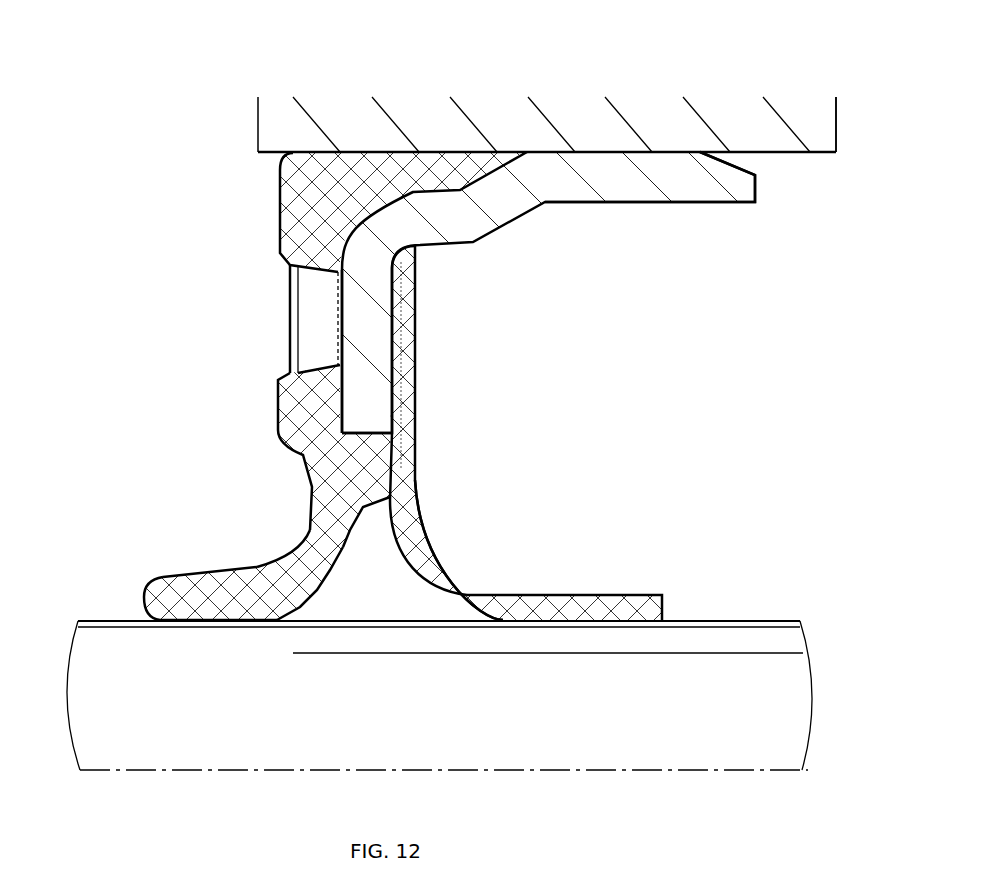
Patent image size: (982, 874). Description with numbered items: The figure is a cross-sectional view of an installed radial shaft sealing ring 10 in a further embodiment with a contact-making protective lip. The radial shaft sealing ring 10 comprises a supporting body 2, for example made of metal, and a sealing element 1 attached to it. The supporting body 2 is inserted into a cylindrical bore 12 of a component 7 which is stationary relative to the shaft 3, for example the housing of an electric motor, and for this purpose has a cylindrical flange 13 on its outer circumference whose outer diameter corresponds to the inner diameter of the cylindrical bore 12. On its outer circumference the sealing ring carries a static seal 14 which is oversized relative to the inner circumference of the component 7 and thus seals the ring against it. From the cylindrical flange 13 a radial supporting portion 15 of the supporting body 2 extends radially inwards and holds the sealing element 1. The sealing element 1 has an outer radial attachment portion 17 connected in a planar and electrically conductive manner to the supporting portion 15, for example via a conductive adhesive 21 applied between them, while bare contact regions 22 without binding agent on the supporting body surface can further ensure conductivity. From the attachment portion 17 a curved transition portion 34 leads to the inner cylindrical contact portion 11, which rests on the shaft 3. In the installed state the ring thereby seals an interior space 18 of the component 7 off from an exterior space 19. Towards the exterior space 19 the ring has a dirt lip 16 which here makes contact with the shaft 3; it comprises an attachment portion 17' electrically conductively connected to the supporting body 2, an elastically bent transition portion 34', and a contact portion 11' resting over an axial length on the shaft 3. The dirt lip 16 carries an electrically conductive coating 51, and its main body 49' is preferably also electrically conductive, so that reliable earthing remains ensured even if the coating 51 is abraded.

The sealing element 1 is at (402, 452).
The supporting body 2 is at (505, 242).
The shaft 3 is at (785, 695).
The component 7 is at (655, 120).
The radial shaft sealing ring 10 is at (263, 283).
The contact portion 11 is at (564, 565).
The contact portion 11' is at (195, 582).
The cylindrical bore 12 is at (812, 153).
The cylindrical flange 13 is at (622, 182).
The static seal 14 is at (417, 180).
The radial supporting portion 15 is at (365, 323).
The dirt lip 16 is at (232, 566).
The attachment portion 17 is at (526, 433).
The attachment portion 17' is at (267, 492).
The interior space 18 is at (698, 400).
The exterior space 19 is at (203, 388).
The conductive adhesive 21 is at (397, 298).
The contact regions 22 is at (597, 150).
The transition portion 34 is at (442, 550).
The transition portion 34' is at (322, 583).
The main body 49' is at (266, 534).
The electrically conductive coating 51 is at (303, 482).